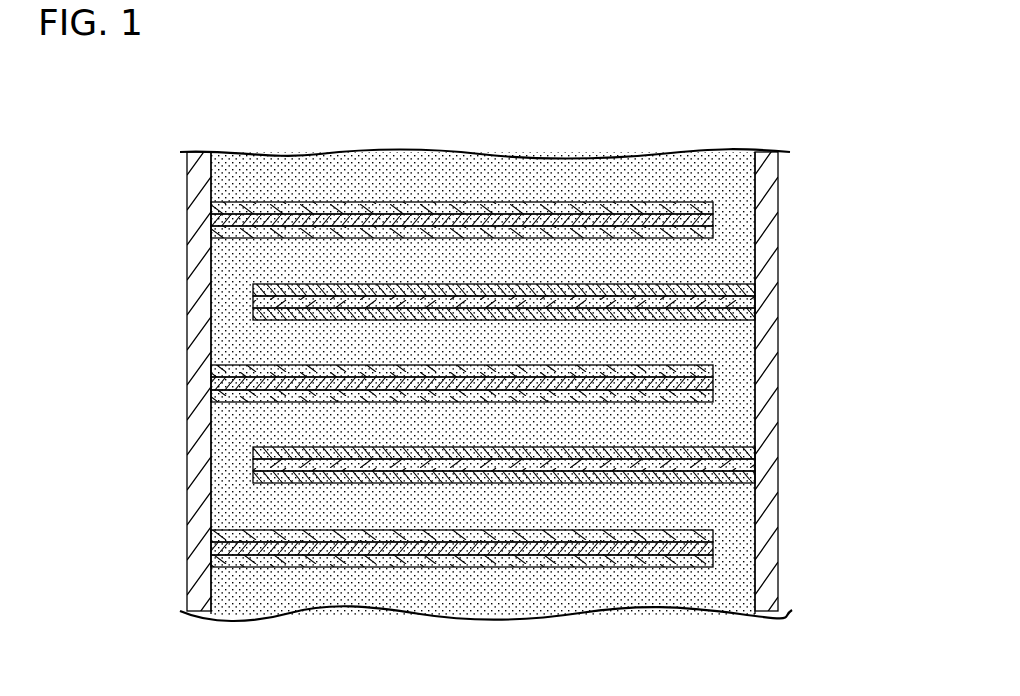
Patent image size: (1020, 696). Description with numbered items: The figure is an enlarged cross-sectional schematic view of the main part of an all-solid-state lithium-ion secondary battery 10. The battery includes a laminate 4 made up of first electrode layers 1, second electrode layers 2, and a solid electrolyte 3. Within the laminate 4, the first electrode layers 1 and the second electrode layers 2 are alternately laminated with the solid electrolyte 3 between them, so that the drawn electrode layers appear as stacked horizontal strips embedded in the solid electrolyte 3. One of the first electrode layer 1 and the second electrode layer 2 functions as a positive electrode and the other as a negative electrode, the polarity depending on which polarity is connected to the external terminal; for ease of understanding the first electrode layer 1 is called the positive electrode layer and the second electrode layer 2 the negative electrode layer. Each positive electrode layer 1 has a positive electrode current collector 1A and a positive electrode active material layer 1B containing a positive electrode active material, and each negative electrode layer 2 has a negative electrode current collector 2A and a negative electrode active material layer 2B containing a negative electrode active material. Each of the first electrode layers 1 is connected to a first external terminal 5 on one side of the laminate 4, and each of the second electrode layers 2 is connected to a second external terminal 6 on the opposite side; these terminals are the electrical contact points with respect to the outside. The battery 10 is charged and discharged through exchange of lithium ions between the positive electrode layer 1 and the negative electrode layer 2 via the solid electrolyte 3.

The all-solid-state lithium-ion secondary battery 10 is at (820, 128).
The first electrode layer 1 is at (95, 165).
The positive electrode current collector 1A is at (212, 220).
The positive electrode active material layer 1B is at (212, 208).
The second electrode layer 2 is at (873, 248).
The negative electrode current collector 2A is at (745, 302).
The negative electrode active material layer 2B is at (745, 290).
The solid electrolyte 3 is at (722, 344).
The laminate 4 is at (755, 242).
The first external terminal 5 is at (198, 312).
The second external terminal 6 is at (765, 557).